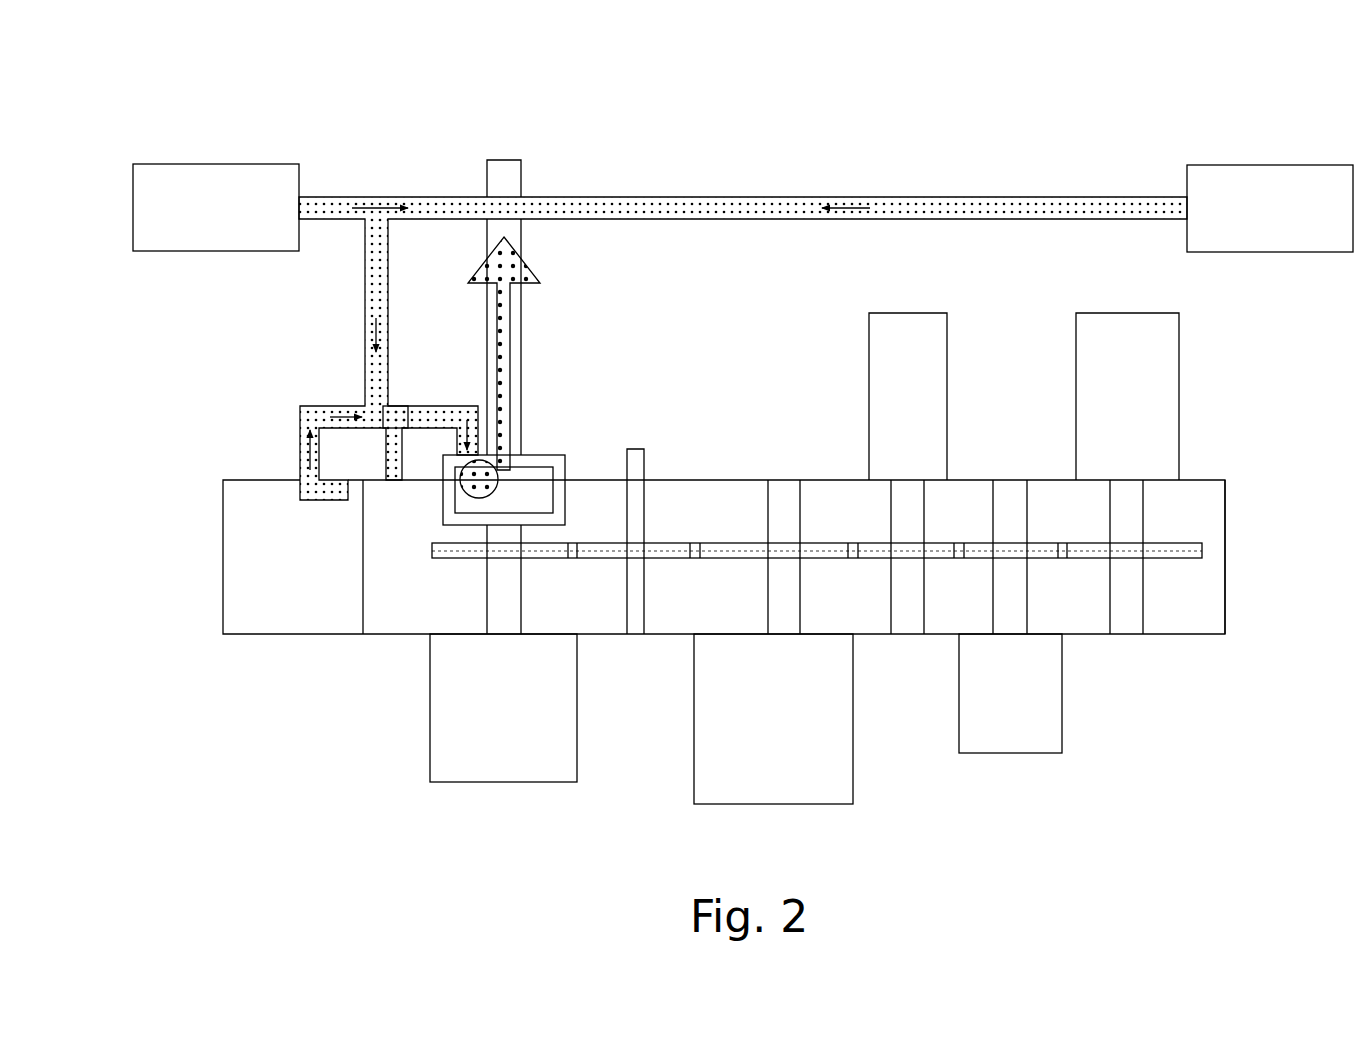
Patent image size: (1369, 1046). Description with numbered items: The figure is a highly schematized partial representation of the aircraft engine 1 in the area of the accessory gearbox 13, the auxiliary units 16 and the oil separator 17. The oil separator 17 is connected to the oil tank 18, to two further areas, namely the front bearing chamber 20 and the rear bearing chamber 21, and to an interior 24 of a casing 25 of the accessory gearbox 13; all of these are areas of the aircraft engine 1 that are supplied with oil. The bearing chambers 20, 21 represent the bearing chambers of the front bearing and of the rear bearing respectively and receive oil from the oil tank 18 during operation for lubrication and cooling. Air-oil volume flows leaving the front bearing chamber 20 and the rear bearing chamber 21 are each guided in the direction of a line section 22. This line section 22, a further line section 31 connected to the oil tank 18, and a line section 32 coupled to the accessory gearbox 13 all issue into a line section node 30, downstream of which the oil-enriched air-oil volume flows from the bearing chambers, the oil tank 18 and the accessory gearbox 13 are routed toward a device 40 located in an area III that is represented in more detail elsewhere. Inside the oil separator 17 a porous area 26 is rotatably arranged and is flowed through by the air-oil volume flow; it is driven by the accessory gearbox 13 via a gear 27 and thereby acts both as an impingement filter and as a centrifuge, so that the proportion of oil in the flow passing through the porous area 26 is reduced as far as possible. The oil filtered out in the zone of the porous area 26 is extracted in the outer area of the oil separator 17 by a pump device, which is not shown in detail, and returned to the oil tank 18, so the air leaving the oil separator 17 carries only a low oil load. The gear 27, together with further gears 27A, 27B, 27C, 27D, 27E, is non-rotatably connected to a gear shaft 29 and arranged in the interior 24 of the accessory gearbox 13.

The aircraft engine 1 is at (135, 145).
The accessory gearbox 13 is at (1205, 652).
The auxiliary units 16 is at (988, 770).
The oil separator 17 is at (543, 443).
The oil tank 18 is at (223, 566).
The front bearing chamber 20 is at (215, 164).
The rear bearing chamber 21 is at (1268, 165).
The line section 22 is at (365, 315).
The interior 24 is at (1193, 490).
The casing 25 is at (1227, 505).
The porous area 26 is at (570, 470).
The gear 27 is at (497, 610).
The gear 27A is at (645, 460).
The gear 27B is at (782, 493).
The gear 27C is at (912, 513).
The gear 27D is at (1012, 625).
The gear 27E is at (1122, 623).
The gear shaft 29 is at (1190, 560).
The line section node 30 is at (352, 395).
The line section 31 is at (297, 458).
The line section 32 is at (395, 482).
The device 40 is at (395, 398).
The area III is at (405, 408).